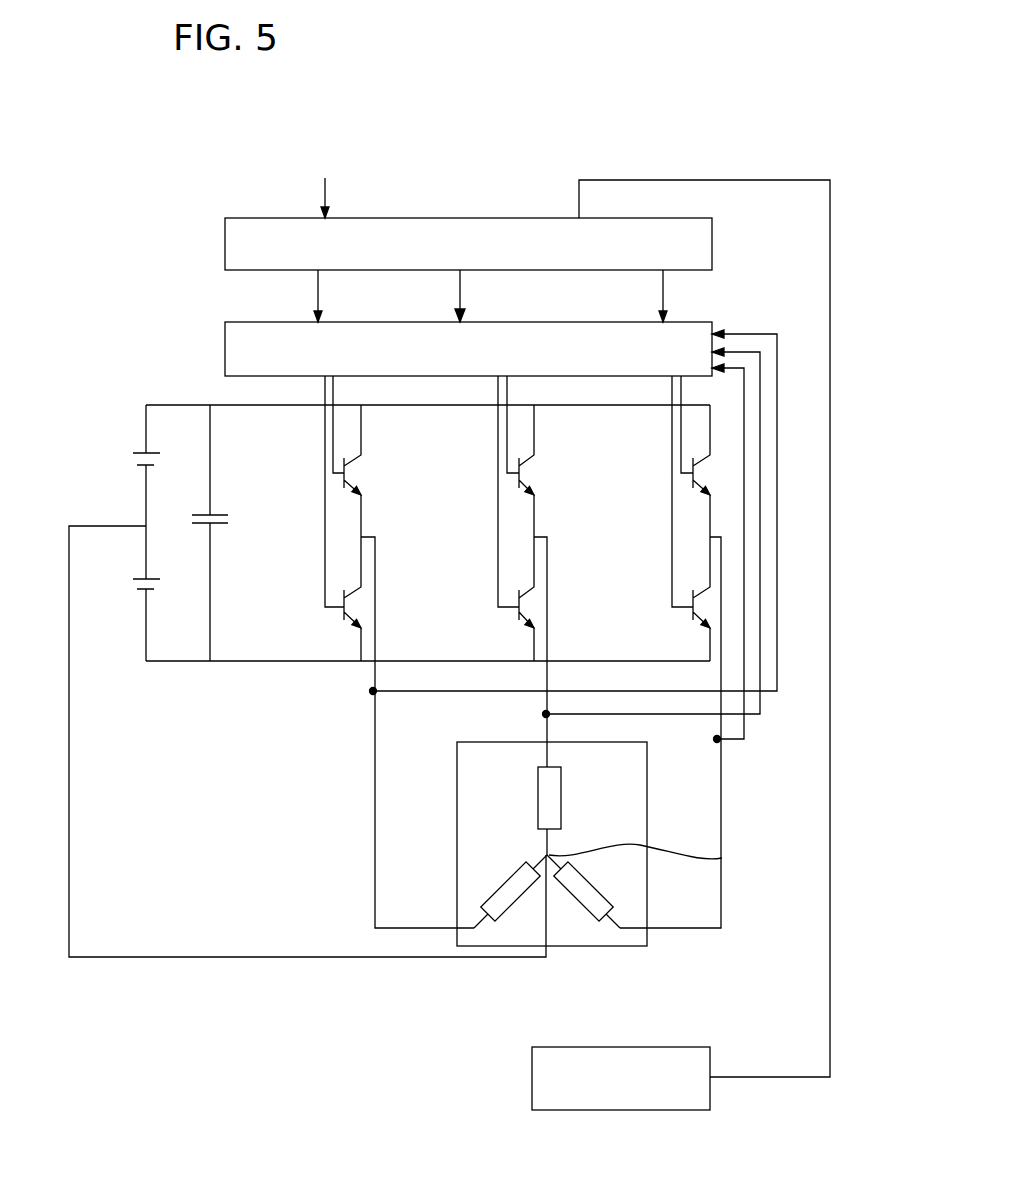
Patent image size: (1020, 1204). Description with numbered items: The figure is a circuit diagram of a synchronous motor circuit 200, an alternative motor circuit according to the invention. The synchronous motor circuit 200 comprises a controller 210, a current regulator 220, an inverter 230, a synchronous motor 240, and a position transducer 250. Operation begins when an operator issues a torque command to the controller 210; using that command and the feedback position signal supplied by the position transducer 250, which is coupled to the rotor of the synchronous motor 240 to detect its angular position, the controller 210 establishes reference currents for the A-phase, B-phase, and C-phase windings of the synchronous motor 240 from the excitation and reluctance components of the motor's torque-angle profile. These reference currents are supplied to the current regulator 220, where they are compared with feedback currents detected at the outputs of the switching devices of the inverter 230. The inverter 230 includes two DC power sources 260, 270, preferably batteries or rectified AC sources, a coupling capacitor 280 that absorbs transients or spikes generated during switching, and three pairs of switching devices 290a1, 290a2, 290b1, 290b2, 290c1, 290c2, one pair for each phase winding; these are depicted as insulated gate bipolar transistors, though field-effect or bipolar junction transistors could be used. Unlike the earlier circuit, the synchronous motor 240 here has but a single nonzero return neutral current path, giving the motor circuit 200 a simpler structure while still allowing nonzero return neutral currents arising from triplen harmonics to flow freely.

The synchronous motor circuit 200 is at (585, 55).
The controller 210 is at (225, 237).
The current regulator 220 is at (225, 345).
The inverter 230 is at (365, 692).
The synchronous motor 240 is at (457, 832).
The position transducer 250 is at (537, 1075).
The DC power source 260 is at (137, 461).
The DC power source 270 is at (137, 580).
The coupling capacitor 280 is at (232, 520).
The switching device 290a1 is at (355, 473).
The switching device 290a2 is at (338, 610).
The switching device 290b1 is at (530, 475).
The switching device 290b2 is at (515, 615).
The switching device 290c1 is at (702, 502).
The switching device 290c2 is at (664, 599).